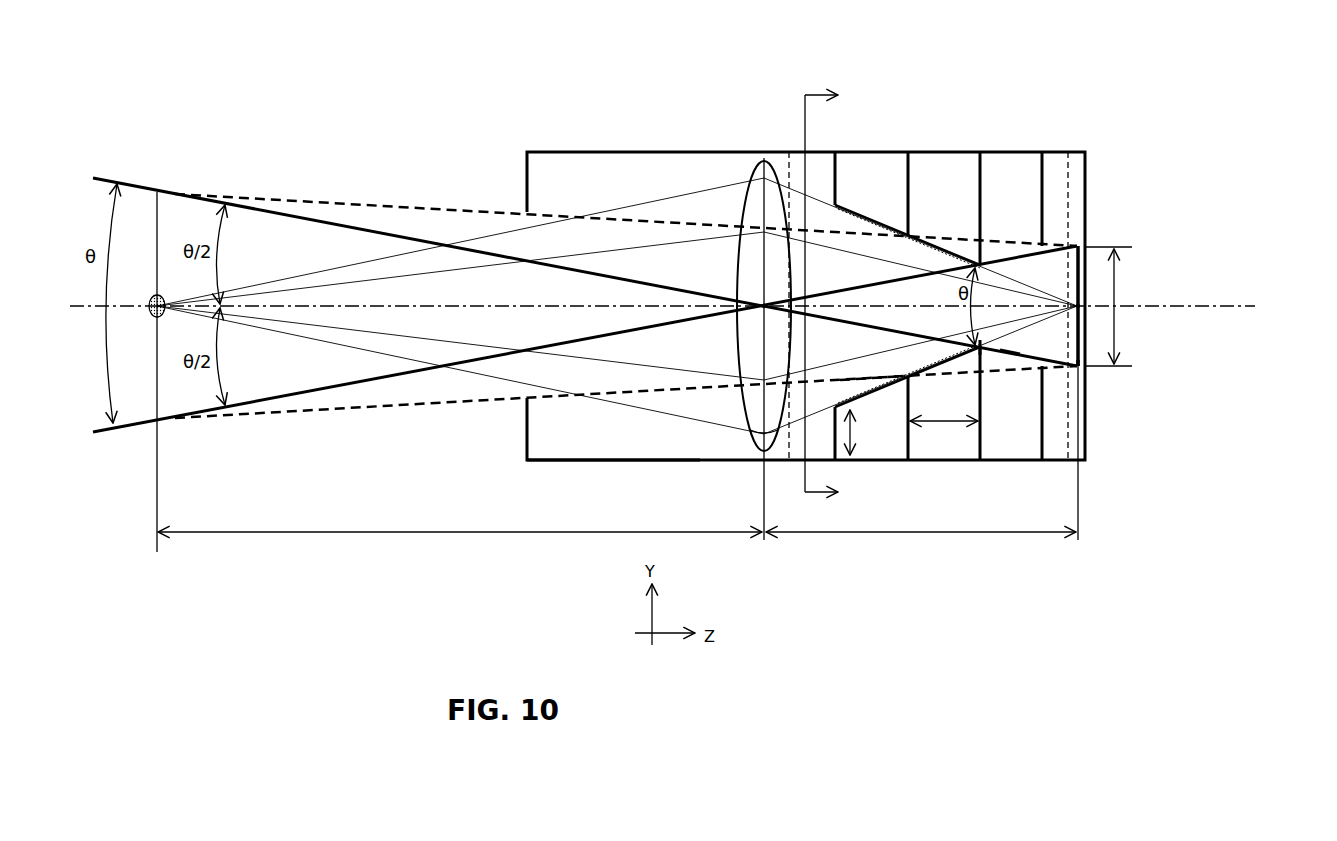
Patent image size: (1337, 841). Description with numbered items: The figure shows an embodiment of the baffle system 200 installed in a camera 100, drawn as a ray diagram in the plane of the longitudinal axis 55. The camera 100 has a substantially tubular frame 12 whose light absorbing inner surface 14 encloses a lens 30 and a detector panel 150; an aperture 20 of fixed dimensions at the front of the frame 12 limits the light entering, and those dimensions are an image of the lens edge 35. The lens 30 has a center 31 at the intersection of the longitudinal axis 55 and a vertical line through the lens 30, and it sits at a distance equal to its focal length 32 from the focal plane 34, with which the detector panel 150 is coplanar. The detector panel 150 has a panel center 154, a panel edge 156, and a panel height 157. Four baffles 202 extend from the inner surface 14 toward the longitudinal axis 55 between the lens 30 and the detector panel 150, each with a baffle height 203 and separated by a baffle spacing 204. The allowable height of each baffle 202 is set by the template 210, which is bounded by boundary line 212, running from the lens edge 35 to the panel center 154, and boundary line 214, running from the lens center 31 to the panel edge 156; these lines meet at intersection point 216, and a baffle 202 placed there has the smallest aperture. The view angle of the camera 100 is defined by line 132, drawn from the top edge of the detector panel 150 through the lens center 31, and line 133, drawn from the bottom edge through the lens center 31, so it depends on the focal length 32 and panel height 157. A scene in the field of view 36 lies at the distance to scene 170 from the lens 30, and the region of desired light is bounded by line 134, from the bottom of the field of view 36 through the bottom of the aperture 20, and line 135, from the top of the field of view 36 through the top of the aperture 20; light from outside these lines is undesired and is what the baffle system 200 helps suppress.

The camera 100 is at (536, 98).
The frame 12 is at (568, 150).
The inner surface 14 is at (563, 459).
The aperture 20 is at (155, 296).
The lens 30 is at (764, 157).
The lens center 31 is at (766, 303).
The focal length 32 is at (921, 516).
The focal plane 34 is at (1080, 498).
The lens edge 35 is at (763, 437).
The field of view 36 is at (153, 342).
The longitudinal axis 55 is at (1165, 307).
The detector panel 150 is at (1087, 249).
The panel center 154 is at (1081, 290).
The panel edge 156 is at (1089, 398).
The panel height 157 is at (1114, 340).
The distance to scene 170 is at (460, 516).
The baffle system 200 is at (1050, 176).
The baffles 202 is at (845, 190).
The baffle height 203 is at (871, 432).
The baffle spacing 204 is at (944, 409).
The template 210 is at (920, 366).
The boundary line 212 is at (879, 379).
The boundary line 214 is at (1012, 352).
The intersection point 216 is at (981, 346).
The line 132 is at (410, 375).
The line 133 is at (430, 240).
The line 134 is at (276, 418).
The line 135 is at (313, 200).